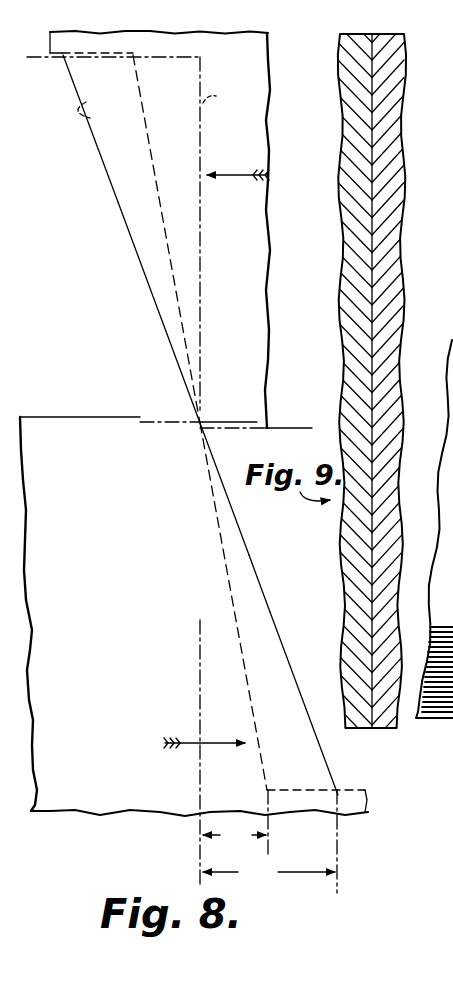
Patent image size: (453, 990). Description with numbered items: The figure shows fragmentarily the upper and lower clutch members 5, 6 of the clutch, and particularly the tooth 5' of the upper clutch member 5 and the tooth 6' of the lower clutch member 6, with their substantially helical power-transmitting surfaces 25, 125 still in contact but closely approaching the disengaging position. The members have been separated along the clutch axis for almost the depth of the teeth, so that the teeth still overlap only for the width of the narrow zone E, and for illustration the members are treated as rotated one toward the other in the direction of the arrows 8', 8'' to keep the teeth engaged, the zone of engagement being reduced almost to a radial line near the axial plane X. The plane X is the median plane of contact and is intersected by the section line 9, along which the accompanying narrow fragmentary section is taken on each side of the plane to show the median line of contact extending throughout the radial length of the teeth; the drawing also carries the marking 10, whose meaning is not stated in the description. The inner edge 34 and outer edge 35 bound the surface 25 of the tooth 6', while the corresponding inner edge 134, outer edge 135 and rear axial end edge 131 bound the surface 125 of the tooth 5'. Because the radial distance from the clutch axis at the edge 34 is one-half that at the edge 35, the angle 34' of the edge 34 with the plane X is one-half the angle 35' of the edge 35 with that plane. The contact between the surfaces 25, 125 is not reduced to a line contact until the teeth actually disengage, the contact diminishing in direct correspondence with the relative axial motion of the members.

In FIG. 8, the upper clutch member 5 is at (160, 217).
In FIG. 8, the lower clutch member 6 is at (194, 636).
In FIG. 8, the tooth of the upper clutch member 5' is at (149, 312).
In FIG. 9, the tooth of the upper clutch member 5' is at (402, 380).
In FIG. 8, the tooth of the lower clutch member 6' is at (304, 703).
In FIG. 9, the tooth of the lower clutch member 6' is at (341, 380).
In FIG. 8, the arrow 8' is at (238, 195).
In FIG. 8, the arrow 8'' is at (204, 729).
In FIG. 8, the section line 9 is at (152, 418).
In FIG. 8, the offset line 10 is at (33, 51).
In FIG. 8, the power-transmitting surface 25 is at (270, 612).
In FIG. 9, the power-transmitting surface 25 is at (372, 237).
In FIG. 8, the power-transmitting surface 125 is at (103, 102).
In FIG. 9, the power-transmitting surface 125 is at (372, 182).
In FIG. 8, the rear axial end edge 131 is at (63, 53).
In FIG. 8, the inner edge 134 is at (157, 200).
In FIG. 8, the outer edge 135 is at (118, 203).
In FIG. 8, the inner edge 34 is at (212, 606).
In FIG. 8, the outer edge 35 is at (245, 489).
In FIG. 8, the angle of edge 34 with plane X 34' is at (235, 822).
In FIG. 8, the angle of edge 35 with plane X 35' is at (270, 841).